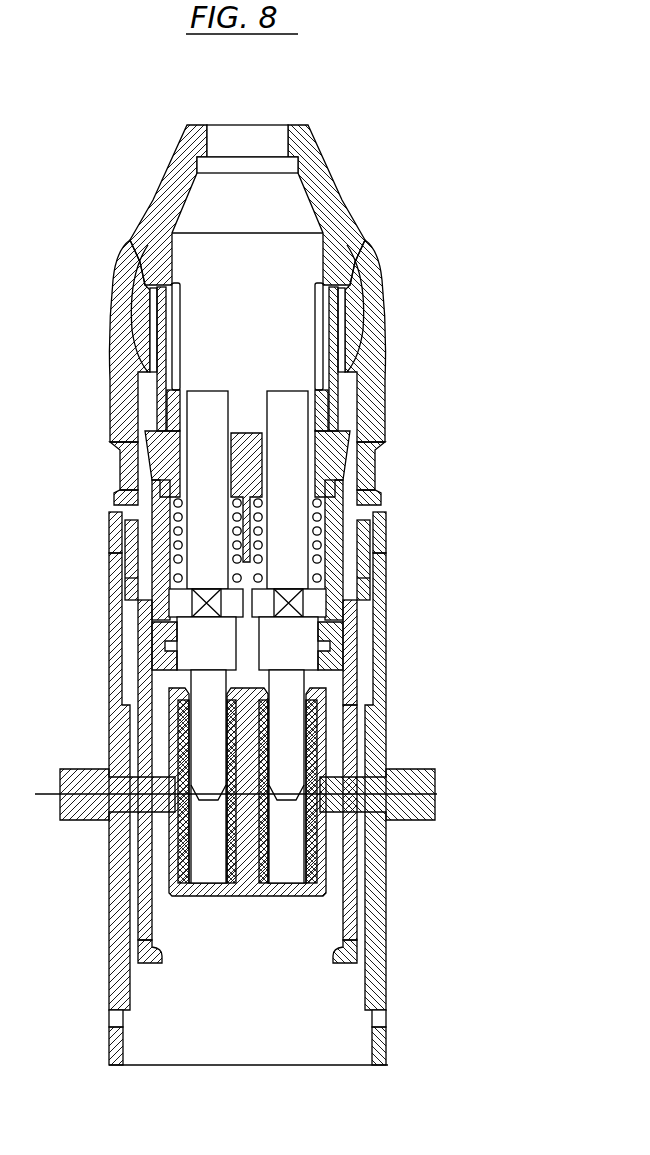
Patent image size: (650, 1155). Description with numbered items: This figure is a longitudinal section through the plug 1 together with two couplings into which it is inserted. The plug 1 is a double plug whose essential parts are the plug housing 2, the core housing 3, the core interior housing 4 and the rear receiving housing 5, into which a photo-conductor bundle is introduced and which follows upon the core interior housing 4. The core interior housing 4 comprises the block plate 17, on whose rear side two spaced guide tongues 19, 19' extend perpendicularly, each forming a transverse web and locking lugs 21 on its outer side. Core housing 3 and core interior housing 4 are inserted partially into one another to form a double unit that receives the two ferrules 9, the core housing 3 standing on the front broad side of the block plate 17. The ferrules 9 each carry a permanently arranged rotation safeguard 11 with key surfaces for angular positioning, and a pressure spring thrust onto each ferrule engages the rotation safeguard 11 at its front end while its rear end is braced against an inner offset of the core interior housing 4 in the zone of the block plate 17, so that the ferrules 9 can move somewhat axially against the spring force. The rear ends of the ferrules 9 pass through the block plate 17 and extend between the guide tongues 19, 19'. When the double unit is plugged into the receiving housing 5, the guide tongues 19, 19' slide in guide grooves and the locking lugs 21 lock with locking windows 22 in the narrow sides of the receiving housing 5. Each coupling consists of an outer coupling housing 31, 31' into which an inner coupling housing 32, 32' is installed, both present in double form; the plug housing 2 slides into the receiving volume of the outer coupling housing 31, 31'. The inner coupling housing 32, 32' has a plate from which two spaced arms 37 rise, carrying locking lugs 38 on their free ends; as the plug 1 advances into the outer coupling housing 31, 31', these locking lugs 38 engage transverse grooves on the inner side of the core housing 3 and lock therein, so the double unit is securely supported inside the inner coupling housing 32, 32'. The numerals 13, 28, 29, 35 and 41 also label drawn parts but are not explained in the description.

The plug 1 is at (229, 102).
The plug housing 2 is at (405, 265).
The core housing 3 is at (152, 592).
The core interior housing 4 is at (320, 413).
The receiving housing 5 is at (165, 192).
The ferrule 9 is at (295, 690).
The rotation safeguard 11 is at (318, 606).
The latching arm 13 is at (380, 470).
The block plate 17 is at (155, 455).
The guide tongue 19 is at (208, 329).
The guide tongue 19' is at (290, 336).
The locking lug 21 is at (152, 337).
The locking window 22 is at (152, 312).
The latching shoulder 28 is at (383, 500).
The outer lobe 29 is at (380, 313).
The outer coupling housing 31 is at (232, 781).
The outer coupling housing 31' is at (205, 1015).
The inner coupling housing 32 is at (200, 730).
The inner coupling housing 32' is at (189, 912).
The sleeve ring 35 is at (118, 562).
The arm 37 is at (360, 725).
The locking lug 38 is at (160, 630).
The contact socket 41 is at (195, 895).